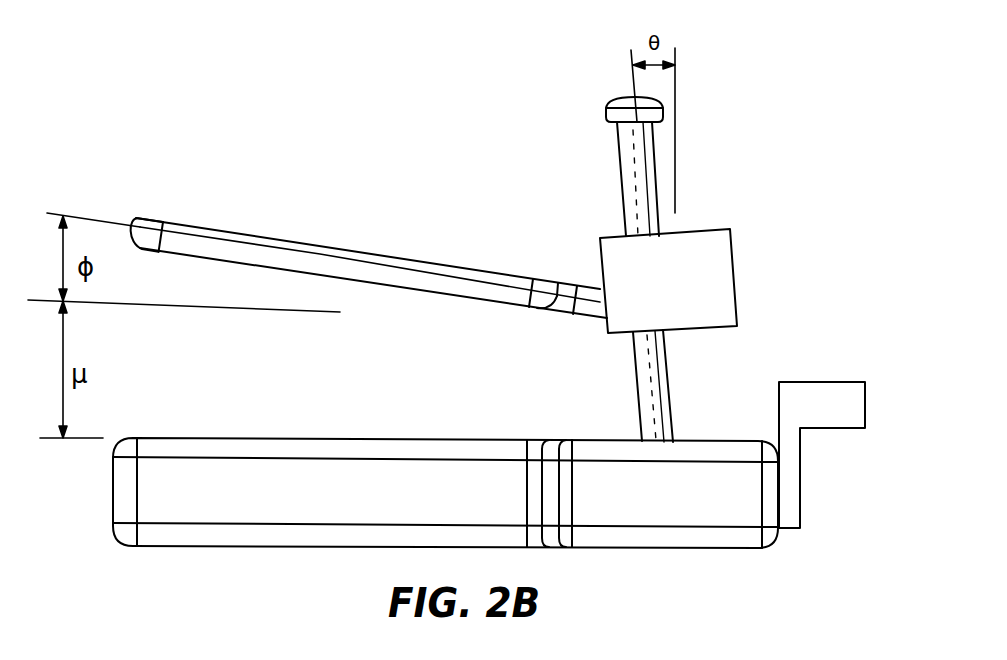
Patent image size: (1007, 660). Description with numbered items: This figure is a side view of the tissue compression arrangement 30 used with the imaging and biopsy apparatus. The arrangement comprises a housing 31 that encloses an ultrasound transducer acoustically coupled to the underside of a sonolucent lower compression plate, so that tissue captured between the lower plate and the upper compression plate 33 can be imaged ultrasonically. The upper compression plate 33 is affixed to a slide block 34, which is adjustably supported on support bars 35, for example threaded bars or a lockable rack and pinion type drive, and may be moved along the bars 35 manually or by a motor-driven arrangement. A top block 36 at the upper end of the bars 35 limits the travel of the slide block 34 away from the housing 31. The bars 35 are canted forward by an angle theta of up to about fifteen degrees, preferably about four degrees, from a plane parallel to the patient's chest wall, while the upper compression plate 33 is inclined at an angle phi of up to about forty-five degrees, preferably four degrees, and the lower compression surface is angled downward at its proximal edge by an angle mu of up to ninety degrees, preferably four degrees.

The compression arrangement 30 is at (256, 132).
The housing 31 is at (417, 504).
The upper compression plate 33 is at (243, 233).
The slide block 34 is at (685, 298).
The support bars 35 is at (633, 373).
The top block 36 is at (605, 112).